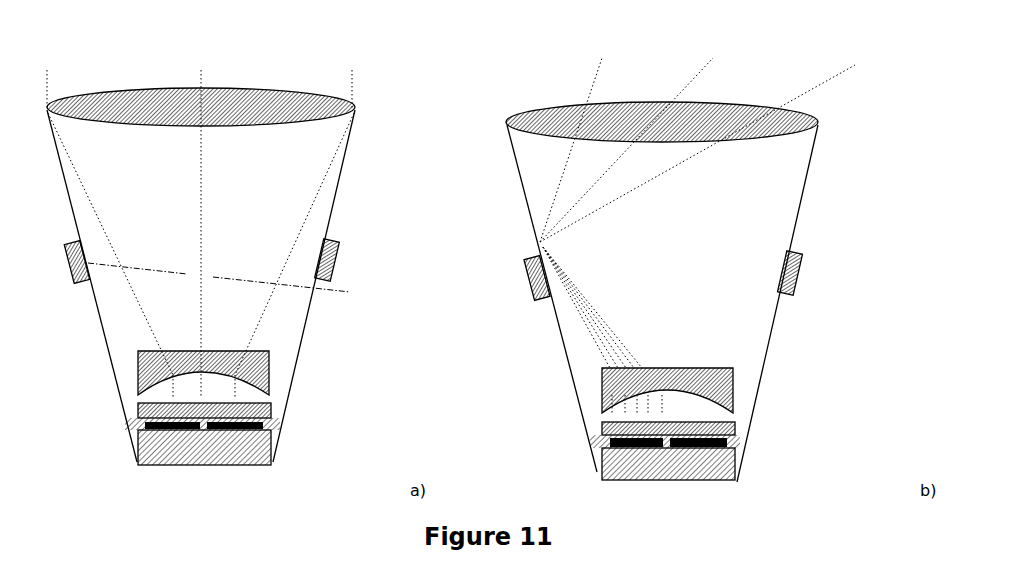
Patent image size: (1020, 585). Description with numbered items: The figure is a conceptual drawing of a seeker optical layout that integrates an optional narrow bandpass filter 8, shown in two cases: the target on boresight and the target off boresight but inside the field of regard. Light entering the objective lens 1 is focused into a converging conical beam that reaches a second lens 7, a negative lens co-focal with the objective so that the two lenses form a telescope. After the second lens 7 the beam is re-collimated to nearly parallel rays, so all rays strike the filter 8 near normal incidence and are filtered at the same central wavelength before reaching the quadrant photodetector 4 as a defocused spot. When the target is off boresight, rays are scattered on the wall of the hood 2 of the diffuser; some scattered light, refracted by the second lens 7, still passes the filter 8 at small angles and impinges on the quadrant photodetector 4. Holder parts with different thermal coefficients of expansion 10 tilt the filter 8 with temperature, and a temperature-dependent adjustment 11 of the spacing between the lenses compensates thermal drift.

The objective lens 1 is at (305, 107).
The scattering hood 2 is at (523, 227).
The quadrant photodetector 4 is at (165, 448).
The second lens 7 is at (263, 367).
The narrow bandpass filter 8 is at (155, 413).
The holder parts with different thermal coefficients of expansion 10 is at (163, 430).
The temperature-dependent adjustment of lens spacing 11 is at (332, 262).